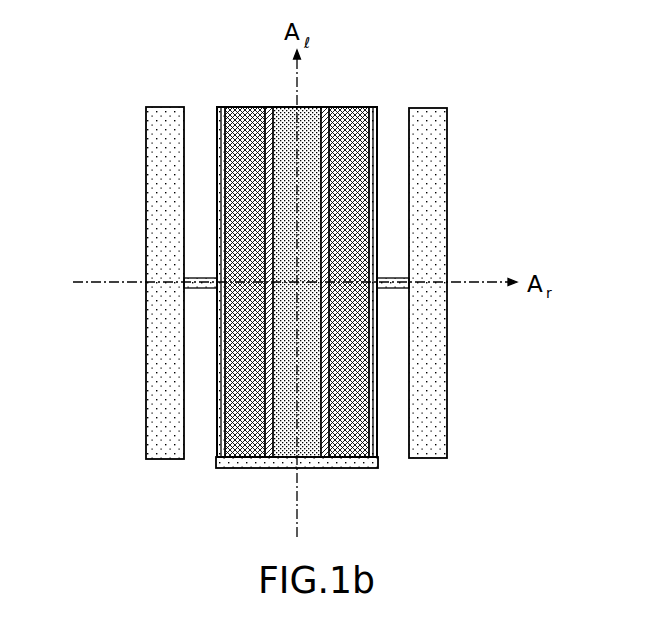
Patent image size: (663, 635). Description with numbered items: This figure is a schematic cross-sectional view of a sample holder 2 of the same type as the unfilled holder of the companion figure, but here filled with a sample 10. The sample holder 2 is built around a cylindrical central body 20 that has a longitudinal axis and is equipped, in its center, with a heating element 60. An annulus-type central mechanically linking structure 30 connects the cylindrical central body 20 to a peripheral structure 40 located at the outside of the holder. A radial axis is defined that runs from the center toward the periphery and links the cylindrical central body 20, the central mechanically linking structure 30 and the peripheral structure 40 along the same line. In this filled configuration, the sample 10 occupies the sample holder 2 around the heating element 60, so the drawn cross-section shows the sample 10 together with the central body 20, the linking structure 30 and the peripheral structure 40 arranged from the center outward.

The sample holder 2 is at (112, 425).
The sample 10 is at (345, 437).
The cylindrical central body 20 is at (377, 405).
The annulus-type central mechanically linking structure 30 is at (393, 288).
The peripheral structure 40 is at (423, 160).
The heating element 60 is at (308, 167).